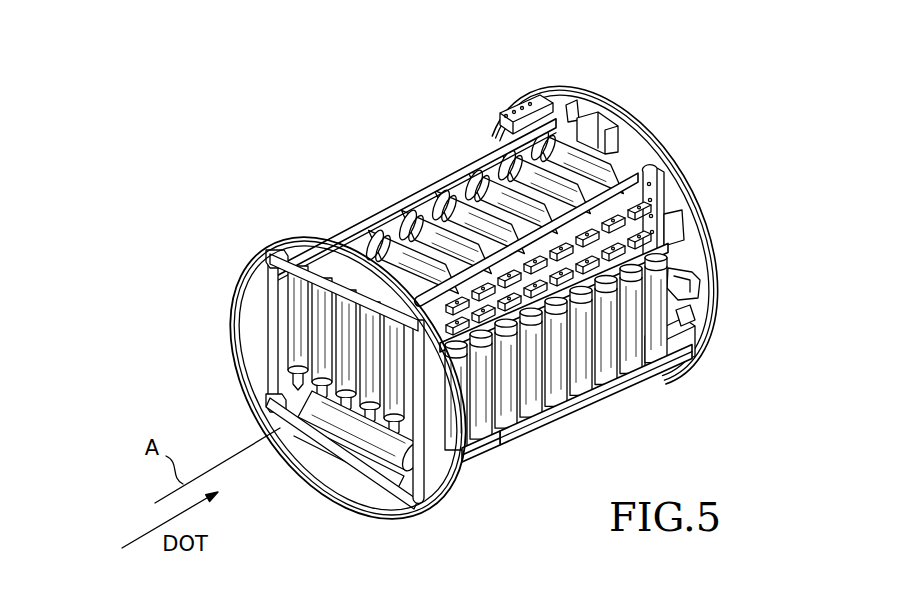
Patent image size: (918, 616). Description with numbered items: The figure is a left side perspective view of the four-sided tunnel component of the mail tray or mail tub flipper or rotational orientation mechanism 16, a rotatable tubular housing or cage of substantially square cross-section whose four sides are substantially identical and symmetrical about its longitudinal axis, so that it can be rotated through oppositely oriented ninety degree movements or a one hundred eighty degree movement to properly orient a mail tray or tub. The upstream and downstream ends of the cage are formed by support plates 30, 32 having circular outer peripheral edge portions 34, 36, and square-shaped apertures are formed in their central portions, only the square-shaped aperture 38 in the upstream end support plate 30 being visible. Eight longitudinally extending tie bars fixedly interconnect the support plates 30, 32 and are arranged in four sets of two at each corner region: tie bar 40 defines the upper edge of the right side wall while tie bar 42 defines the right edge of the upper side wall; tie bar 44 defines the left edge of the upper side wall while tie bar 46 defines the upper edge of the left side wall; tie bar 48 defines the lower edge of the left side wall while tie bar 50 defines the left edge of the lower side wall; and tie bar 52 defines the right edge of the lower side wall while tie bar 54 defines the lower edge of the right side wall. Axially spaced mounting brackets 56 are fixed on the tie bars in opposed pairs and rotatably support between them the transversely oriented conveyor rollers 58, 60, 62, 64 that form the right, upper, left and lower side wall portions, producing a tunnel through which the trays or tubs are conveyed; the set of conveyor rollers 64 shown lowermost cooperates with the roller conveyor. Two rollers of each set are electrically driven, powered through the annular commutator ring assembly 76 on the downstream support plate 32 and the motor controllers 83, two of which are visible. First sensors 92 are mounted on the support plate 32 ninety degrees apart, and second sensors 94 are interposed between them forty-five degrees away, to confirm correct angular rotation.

The mail tray or mail tub flipper or rotational orientation mechanism 16 is at (312, 190).
The upstream end support plate 30 is at (352, 495).
The downstream end support plate 32 is at (623, 132).
The circular outer peripheral edge portion 34 is at (298, 232).
The circular outer peripheral edge portion 36 is at (716, 277).
The square-shaped aperture 38 is at (462, 458).
The tie bar 40 is at (660, 238).
The tie bar 42 is at (640, 225).
The tie bar 44 is at (418, 187).
The tie bar 46 is at (273, 277).
The tie bar 48 is at (283, 400).
The tie bar 50 is at (283, 443).
The tie bar 52 is at (427, 432).
The tie bar 54 is at (553, 410).
The mounting brackets 56 is at (560, 215).
The conveyor rollers 58 is at (612, 352).
The conveyor rollers 60 is at (478, 162).
The conveyor rollers 62 is at (318, 333).
The conveyor rollers 64 is at (362, 468).
The annular commutator ring assembly 76 is at (237, 278).
The motor controllers 83 is at (580, 126).
The first sensors 92 is at (574, 100).
The second sensors 94 is at (683, 188).